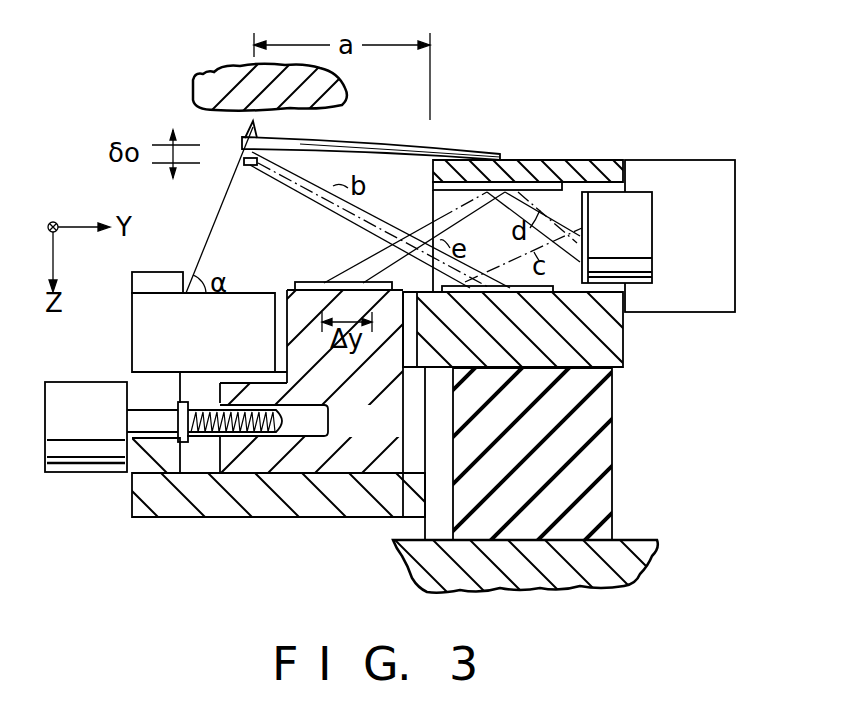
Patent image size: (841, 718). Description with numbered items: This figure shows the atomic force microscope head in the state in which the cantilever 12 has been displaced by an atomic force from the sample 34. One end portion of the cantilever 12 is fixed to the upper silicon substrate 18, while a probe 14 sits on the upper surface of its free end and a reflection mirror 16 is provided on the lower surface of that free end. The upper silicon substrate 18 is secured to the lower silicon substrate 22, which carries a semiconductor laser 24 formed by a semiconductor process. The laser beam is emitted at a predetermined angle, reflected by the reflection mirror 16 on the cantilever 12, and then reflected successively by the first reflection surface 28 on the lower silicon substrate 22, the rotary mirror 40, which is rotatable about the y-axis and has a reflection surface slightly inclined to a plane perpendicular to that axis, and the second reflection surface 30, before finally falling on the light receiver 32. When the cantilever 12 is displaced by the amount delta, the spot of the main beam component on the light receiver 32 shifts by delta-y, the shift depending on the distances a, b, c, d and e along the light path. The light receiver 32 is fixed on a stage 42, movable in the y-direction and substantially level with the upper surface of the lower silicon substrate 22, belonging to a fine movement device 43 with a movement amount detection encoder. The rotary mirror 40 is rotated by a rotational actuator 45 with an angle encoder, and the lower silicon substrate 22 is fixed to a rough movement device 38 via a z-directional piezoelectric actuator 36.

The cantilever 12 is at (332, 148).
The probe 14 is at (248, 123).
The reflection mirror 16 is at (244, 161).
The upper silicon substrate 18 is at (539, 159).
The lower silicon substrate 22 is at (625, 346).
The semiconductor laser 24 is at (157, 272).
The first reflection surface 28 is at (585, 277).
The second reflection surface 30 is at (434, 190).
The light receiver 32 is at (305, 282).
The sample 34 is at (345, 94).
The piezoelectric actuator 36 is at (612, 409).
The rough movement device 38 is at (630, 540).
The rotary mirror 40 is at (578, 206).
The stage 42 is at (285, 290).
The fine movement device 43 is at (226, 519).
The rotational actuator 45 is at (678, 160).